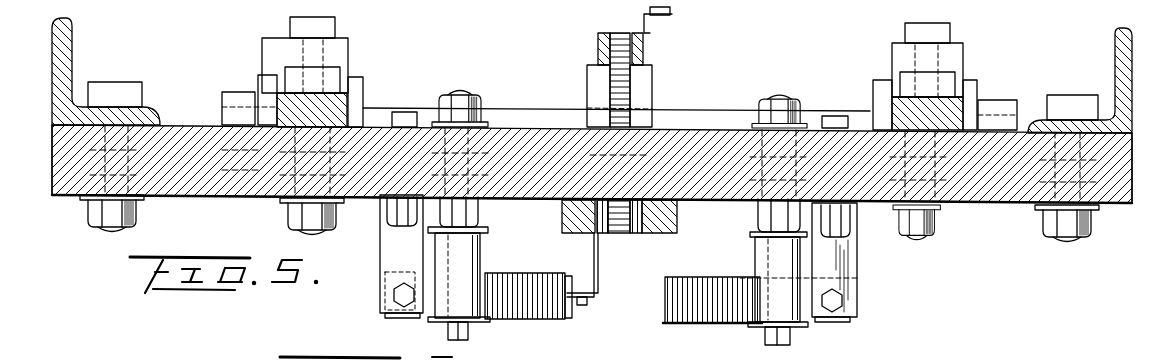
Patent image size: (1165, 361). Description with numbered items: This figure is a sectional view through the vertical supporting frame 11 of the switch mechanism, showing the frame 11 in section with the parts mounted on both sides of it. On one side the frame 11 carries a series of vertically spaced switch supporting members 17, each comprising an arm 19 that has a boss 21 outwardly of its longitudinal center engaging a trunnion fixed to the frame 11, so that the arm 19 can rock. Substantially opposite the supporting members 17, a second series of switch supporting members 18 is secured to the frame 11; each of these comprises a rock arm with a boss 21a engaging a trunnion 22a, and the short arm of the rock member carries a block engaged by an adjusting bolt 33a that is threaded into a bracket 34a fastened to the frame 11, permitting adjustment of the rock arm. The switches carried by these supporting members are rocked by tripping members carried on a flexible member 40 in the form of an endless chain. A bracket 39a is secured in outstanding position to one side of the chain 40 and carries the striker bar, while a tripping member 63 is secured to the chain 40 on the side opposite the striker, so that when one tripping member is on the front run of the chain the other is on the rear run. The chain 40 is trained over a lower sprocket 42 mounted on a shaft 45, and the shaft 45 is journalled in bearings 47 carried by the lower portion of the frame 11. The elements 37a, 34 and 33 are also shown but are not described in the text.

The vertical supporting frame 11 is at (1133, 135).
The bearings 47 is at (345, 78).
The shaft 45 is at (688, 108).
The flexible member 40 is at (598, 45).
The tripping member 63 is at (673, 12).
The lower sprocket 42 is at (617, 235).
The angle bracket 37a is at (581, 290).
The bracket 39a is at (582, 306).
The bracket 34a is at (397, 215).
The adjusting bolt 33a is at (399, 297).
The boss 21a is at (484, 263).
The trunnion 22a is at (449, 332).
The switch supporting members 18 is at (506, 326).
The switch supporting members 17 is at (700, 324).
The arm 19 is at (726, 326).
The boss 21 is at (753, 260).
The bearing bracket 34 is at (858, 225).
The bolt 33 is at (842, 305).